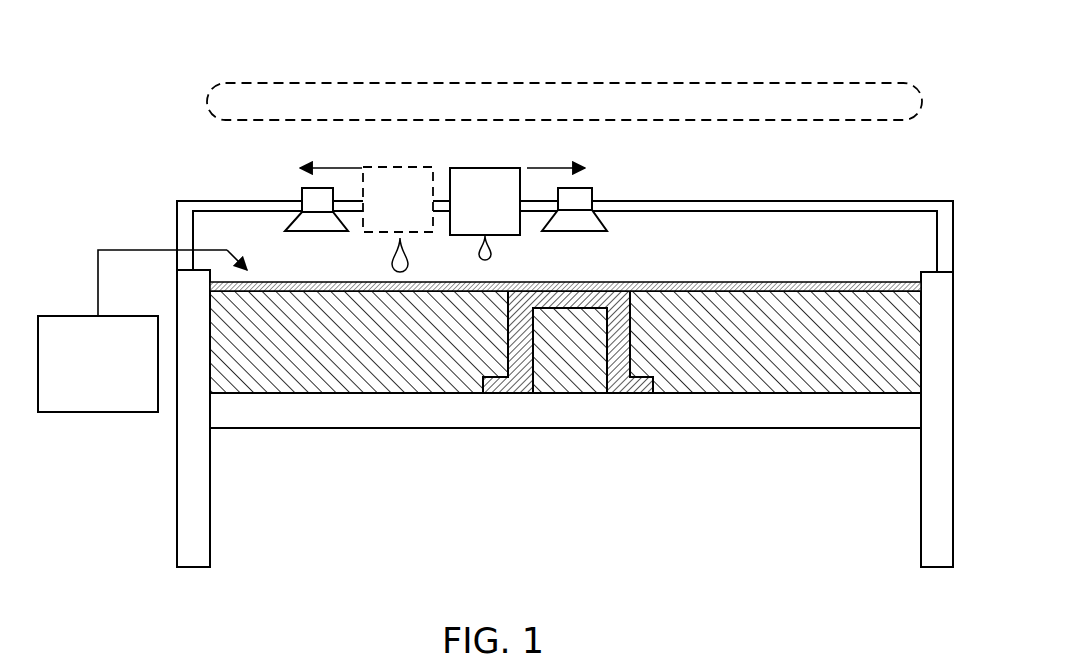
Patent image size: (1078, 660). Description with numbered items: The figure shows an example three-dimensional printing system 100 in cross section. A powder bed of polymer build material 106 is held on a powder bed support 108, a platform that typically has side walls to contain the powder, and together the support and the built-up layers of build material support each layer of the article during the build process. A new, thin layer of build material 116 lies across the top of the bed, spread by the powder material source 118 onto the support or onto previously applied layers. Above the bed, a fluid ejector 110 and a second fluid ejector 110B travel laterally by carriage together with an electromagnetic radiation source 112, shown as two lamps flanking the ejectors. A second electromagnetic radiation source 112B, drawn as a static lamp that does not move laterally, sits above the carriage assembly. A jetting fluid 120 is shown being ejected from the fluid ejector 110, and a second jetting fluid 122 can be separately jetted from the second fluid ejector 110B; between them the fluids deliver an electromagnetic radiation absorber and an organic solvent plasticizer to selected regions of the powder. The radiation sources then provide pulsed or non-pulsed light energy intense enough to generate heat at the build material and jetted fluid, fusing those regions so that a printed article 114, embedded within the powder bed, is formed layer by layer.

The three-dimensional printing system 100 is at (207, 55).
The polymer build material 106 is at (395, 377).
The powder bed support 108 is at (692, 410).
The fluid ejector 110 is at (505, 210).
The second fluid ejector 110B is at (426, 210).
The electromagnetic radiation source 112 is at (318, 200).
The second electromagnetic radiation source 112B is at (576, 111).
The printed article 114 is at (618, 292).
The layer of build material 116 is at (802, 288).
The powder material source 118 is at (118, 376).
The jetting fluid 120 is at (395, 266).
The second jetting fluid 122 is at (490, 254).